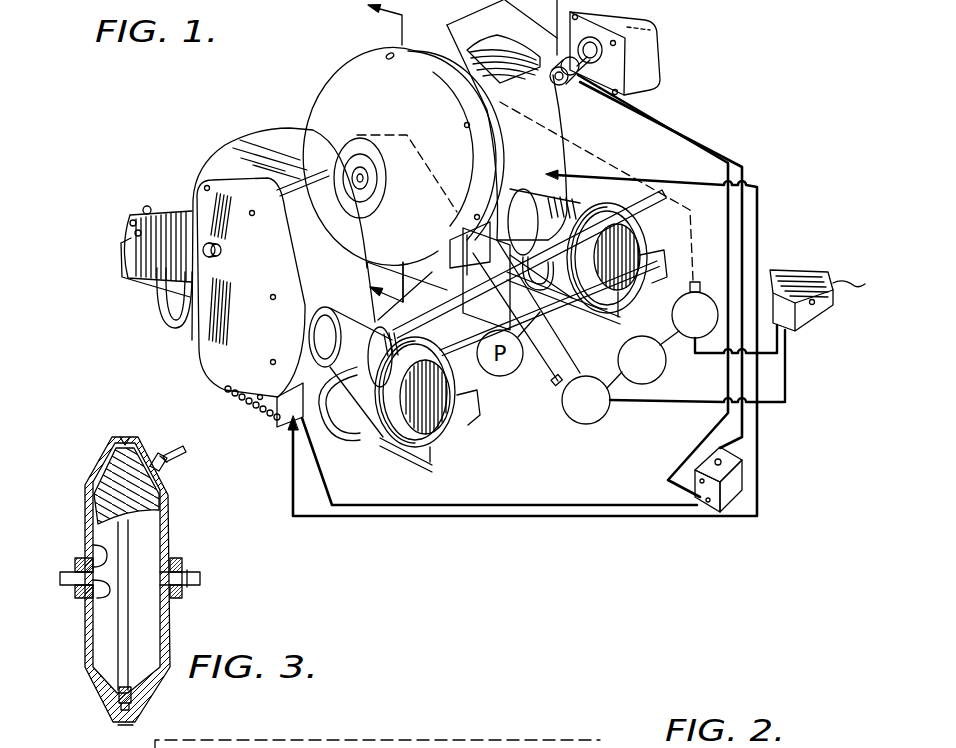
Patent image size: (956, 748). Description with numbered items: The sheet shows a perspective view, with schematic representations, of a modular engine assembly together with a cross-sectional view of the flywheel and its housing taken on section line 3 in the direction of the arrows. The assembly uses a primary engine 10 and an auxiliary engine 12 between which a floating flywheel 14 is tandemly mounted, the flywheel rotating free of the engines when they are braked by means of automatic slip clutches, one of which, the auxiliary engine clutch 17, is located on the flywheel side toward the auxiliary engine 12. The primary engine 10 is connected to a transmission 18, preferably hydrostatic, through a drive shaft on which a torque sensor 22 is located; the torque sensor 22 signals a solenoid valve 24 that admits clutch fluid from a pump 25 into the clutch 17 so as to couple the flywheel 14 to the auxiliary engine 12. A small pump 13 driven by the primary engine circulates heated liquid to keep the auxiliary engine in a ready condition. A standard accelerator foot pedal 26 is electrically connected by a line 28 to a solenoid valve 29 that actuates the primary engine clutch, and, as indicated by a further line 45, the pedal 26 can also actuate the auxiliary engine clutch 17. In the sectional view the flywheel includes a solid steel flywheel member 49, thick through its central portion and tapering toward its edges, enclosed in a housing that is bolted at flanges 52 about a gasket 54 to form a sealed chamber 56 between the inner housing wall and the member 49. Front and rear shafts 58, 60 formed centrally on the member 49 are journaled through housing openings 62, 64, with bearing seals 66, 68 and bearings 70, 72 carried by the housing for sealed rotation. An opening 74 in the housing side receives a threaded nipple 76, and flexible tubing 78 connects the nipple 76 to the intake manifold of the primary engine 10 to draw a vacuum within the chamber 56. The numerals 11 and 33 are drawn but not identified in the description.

In FIG. 1, the section line 3— 3 is at (407, 160).
In FIG. 1, the primary engine 10 is at (514, 43).
In FIG. 1, the abrasive nozzle 11 is at (478, 370).
In FIG. 1, the auxiliary engine 12 is at (236, 139).
In FIG. 1, the small pump 13 is at (510, 375).
In FIG. 1, the floating flywheel 14 is at (326, 70).
In FIG. 1, the auxiliary engine clutch 17 is at (347, 140).
In FIG. 1, the transmission 18 is at (672, 62).
In FIG. 1, the torque sensor 22 is at (575, 88).
In FIG. 1, the solenoid valve 24 is at (590, 426).
In FIG. 1, the pump 25 is at (664, 368).
In FIG. 1, the accelerator foot pedal 26 is at (816, 267).
In FIG. 1, the line 28 is at (755, 355).
In FIG. 1, the solenoid valve 29 is at (672, 314).
In FIG. 1, the line 45 is at (618, 410).
In FIG. 1, the bolted flanges 52 is at (388, 62).
In FIG. 3, the solid flywheel member 49 is at (145, 508).
In FIG. 3, the gasket 54 is at (125, 435).
In FIG. 3, the chamber 56 is at (160, 537).
In FIG. 3, the front shaft 58 is at (60, 580).
In FIG. 3, the rear shaft 60 is at (200, 586).
In FIG. 3, the housing opening 62 is at (96, 600).
In FIG. 3, the housing opening 64 is at (178, 598).
In FIG. 3, the bearing seal 66 is at (97, 545).
In FIG. 3, the bearing seal 68 is at (182, 565).
In FIG. 3, the bearing 70 is at (78, 597).
In FIG. 3, the bearing 72 is at (187, 578).
In FIG. 3, the opening 74 is at (156, 458).
In FIG. 3, the nipple 76 is at (165, 468).
In FIG. 3, the flexible tubing 78 is at (186, 449).
In FIG. 2, the cabinet wall 33 is at (385, 740).